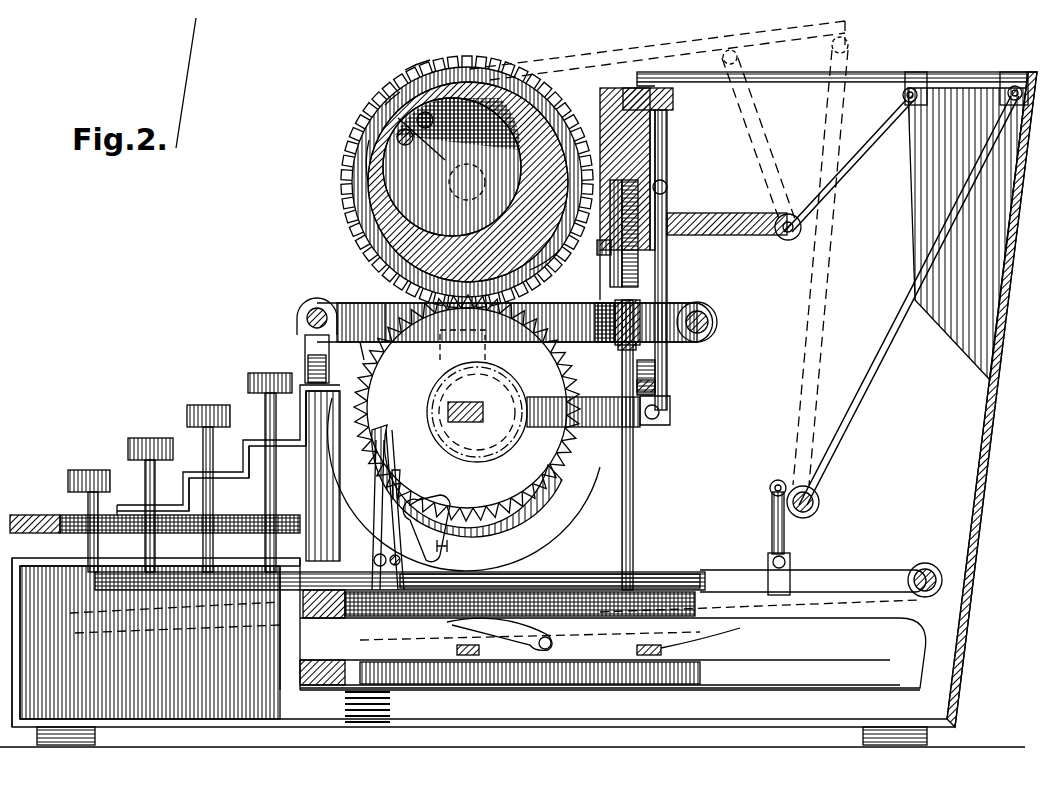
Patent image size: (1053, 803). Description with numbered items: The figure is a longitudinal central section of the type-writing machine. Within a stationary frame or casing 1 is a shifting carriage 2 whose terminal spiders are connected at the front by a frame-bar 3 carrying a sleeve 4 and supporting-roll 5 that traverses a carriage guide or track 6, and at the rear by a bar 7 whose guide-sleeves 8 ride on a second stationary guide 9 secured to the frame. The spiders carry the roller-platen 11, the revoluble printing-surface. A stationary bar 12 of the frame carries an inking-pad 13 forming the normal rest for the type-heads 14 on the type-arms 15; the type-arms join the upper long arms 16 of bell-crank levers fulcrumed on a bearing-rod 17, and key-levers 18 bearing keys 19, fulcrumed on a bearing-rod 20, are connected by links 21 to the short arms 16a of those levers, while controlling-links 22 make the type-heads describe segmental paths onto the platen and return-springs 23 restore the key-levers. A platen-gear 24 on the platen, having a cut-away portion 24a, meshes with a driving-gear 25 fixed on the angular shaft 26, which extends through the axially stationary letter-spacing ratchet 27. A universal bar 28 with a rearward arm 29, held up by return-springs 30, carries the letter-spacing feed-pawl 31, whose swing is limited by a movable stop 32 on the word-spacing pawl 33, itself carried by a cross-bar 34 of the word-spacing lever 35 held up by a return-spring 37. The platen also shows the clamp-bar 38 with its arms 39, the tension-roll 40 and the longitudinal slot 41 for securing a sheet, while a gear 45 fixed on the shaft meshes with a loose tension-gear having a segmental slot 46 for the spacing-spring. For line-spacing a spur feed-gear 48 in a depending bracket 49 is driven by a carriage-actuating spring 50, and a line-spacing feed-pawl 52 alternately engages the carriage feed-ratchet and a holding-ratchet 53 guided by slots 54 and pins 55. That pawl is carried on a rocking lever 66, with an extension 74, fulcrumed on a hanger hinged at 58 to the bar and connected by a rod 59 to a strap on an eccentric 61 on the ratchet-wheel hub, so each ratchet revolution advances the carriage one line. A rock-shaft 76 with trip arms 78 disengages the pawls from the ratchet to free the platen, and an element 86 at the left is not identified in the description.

The stationary frame or casing 1 is at (992, 436).
The shifting frame or carriage 2 is at (348, 303).
The frame-bar 3 is at (312, 310).
The sleeve 4 is at (300, 320).
The supporting-roll 5 is at (307, 350).
The carriage guide or track 6 is at (310, 384).
The bar 7 is at (620, 346).
The guide-sleeves 8 is at (714, 324).
The stationary guide 9 is at (702, 312).
The roller-platen 11 is at (345, 190).
The stationary bar 12 is at (600, 96).
The inking-pad 13 is at (634, 90).
The type-heads 14 is at (636, 74).
The type-arms 15 is at (805, 81).
The upper long arms of bell-crank levers 16 is at (918, 288).
The short forwardly-extending arms of bell-crank levers 16a is at (776, 480).
The bearing-rod 17 is at (818, 502).
The key-levers 18 is at (660, 571).
The keys 19 is at (100, 464).
The bearing-rod 20 is at (925, 563).
The links 21 is at (772, 530).
The controlling-links 22 is at (862, 147).
The return-springs 23 is at (727, 640).
The platen-gear 24 is at (372, 136).
The cut-away portion 24a is at (543, 278).
The driving-gear 25 is at (385, 303).
The rotary shaft 26 is at (448, 408).
The letter-spacing ratchet 27 is at (467, 416).
The universal bar 28 is at (325, 580).
The arm 29 is at (552, 575).
The return-springs 30 is at (506, 630).
The letter-spacing feed-pawl 31 is at (388, 530).
The movable stop 32 is at (392, 538).
The word-spacing pawl 33 is at (378, 508).
The cross-bar 34 is at (320, 690).
The word-spacing lever 35 is at (503, 690).
The return-spring 37 is at (392, 714).
The clamp-bar 38 is at (415, 75).
The arms 39 is at (421, 131).
The tension-roll 40 is at (370, 152).
The longitudinal slot 41 is at (392, 100).
The gear 45 is at (364, 352).
The segmental slot 46 is at (464, 484).
The spur feed-gear 48 is at (610, 268).
The depending bracket 49 is at (660, 214).
The carriage-actuating spring 50 is at (606, 283).
The line-spacing feed-pawl 52 is at (634, 470).
The holding-ratchet 53 is at (612, 343).
The slots 54 is at (666, 275).
The guide-pins or screws 55 is at (596, 320).
The hinge 58 is at (667, 187).
The rod 59 is at (545, 398).
The eccentric 61 is at (447, 386).
The rocking lever 66 is at (657, 372).
The extension 74 is at (658, 390).
The rock-shaft 76 is at (448, 553).
The trip arms or cams 78 is at (440, 540).
The bar 86 is at (38, 515).